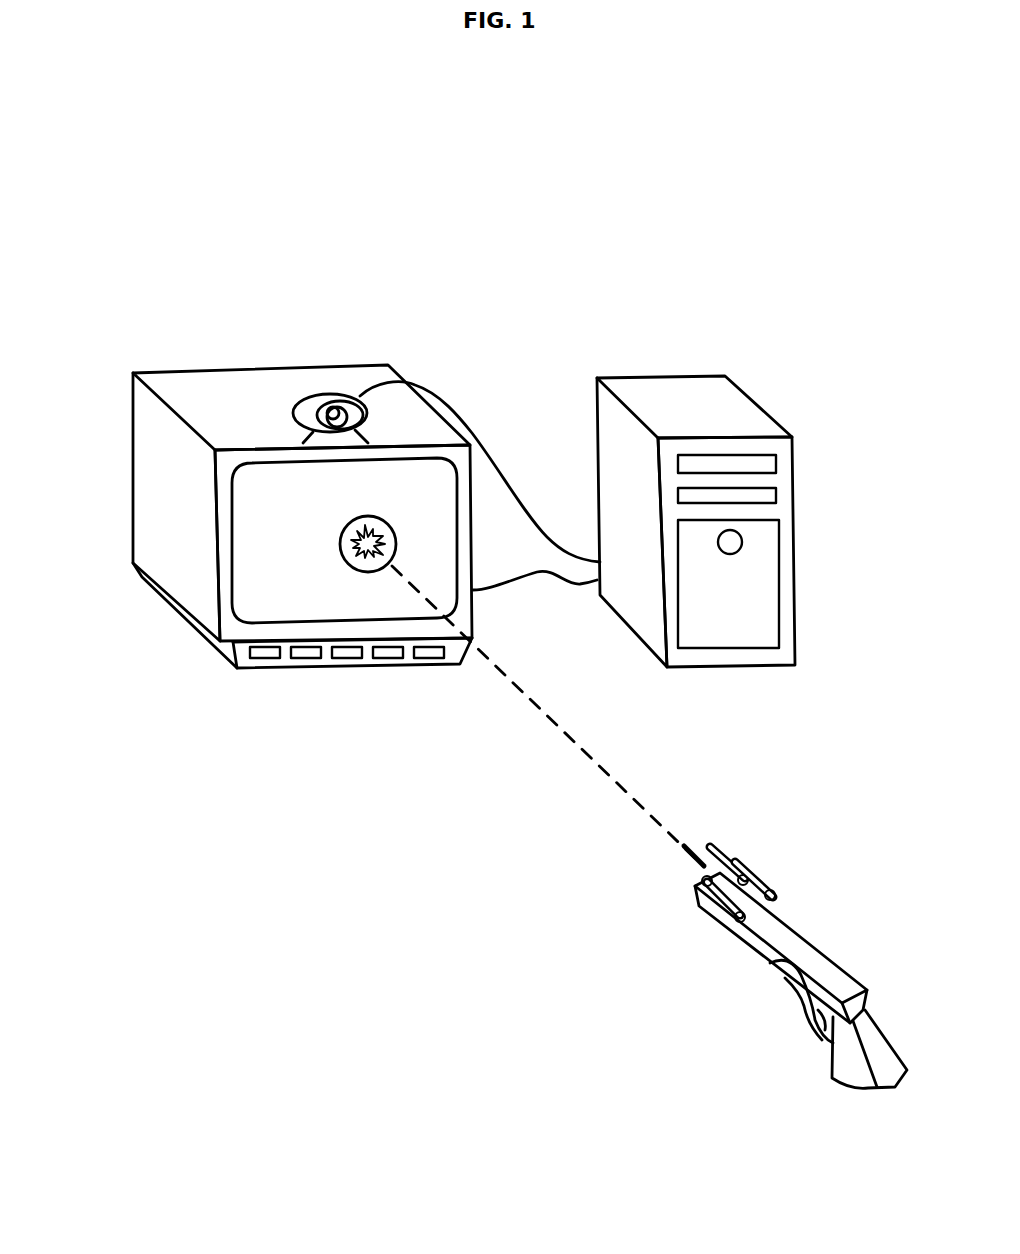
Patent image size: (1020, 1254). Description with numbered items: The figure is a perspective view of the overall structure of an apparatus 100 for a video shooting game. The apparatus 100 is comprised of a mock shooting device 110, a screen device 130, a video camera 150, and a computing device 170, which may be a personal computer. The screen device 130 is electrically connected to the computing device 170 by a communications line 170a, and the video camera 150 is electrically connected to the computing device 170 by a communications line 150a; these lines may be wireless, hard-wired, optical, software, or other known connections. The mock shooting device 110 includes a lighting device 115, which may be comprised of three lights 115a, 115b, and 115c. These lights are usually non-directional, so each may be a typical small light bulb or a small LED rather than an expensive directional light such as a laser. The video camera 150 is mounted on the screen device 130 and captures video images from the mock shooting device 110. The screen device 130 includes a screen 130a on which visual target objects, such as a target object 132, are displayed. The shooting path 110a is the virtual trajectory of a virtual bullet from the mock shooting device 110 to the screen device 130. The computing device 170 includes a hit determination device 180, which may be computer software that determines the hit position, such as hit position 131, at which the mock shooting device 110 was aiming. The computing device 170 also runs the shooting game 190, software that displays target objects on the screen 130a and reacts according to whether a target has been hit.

The apparatus 100 is at (567, 251).
The mock shooting device 110 is at (787, 957).
The shooting path 110a is at (560, 738).
The lighting device 115 is at (708, 883).
The light 115a is at (685, 848).
The light 115b is at (710, 843).
The light 115c is at (737, 845).
The screen device 130 is at (190, 586).
The screen 130a is at (278, 512).
The hit position 131 is at (364, 571).
The target object 132 is at (358, 553).
The video camera 150 is at (317, 404).
The communications line 150a is at (508, 463).
The computing device 170 is at (755, 588).
The communications line 170a is at (525, 580).
The hit determination device 180 is at (650, 413).
The shooting game 190 is at (730, 413).